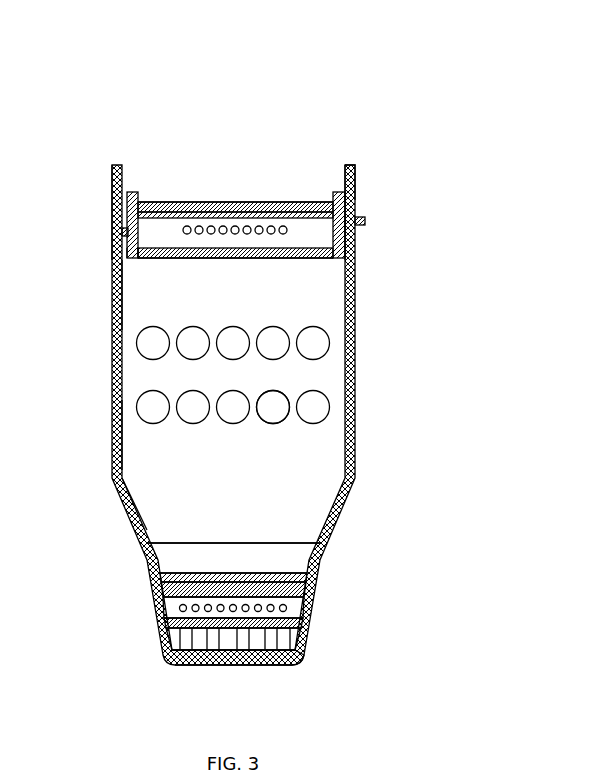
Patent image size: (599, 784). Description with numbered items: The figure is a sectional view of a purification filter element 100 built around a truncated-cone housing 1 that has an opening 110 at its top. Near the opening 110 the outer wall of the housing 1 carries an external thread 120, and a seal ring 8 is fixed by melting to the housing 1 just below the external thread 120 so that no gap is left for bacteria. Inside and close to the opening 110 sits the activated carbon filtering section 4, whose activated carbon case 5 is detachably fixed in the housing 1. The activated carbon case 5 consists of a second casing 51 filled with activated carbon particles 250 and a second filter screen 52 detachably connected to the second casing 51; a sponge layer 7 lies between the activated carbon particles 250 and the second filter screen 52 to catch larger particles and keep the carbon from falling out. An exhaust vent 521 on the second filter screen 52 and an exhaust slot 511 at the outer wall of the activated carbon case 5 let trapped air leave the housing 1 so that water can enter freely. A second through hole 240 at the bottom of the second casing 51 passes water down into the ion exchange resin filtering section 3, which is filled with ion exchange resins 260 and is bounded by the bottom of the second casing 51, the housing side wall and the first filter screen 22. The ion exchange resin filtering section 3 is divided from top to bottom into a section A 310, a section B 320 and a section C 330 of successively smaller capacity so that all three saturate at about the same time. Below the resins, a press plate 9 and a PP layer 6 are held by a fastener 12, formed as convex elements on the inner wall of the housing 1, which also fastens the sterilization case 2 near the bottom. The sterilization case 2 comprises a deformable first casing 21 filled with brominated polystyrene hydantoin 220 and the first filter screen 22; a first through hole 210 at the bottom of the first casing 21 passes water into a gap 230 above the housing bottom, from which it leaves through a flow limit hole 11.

The purification filter element 100 is at (385, 85).
The housing 1 is at (355, 378).
The opening 110 is at (305, 200).
The external thread 120 is at (352, 195).
The section A 310 is at (150, 290).
The section B 320 is at (150, 433).
The section C 330 is at (152, 520).
The ion exchange resin filtering section 3 is at (137, 405).
The ion exchange resins 260 is at (268, 402).
The second through hole 240 is at (262, 258).
The activated carbon particles 250 is at (170, 214).
The activated carbon case 5 is at (405, 205).
The second casing 51 is at (356, 258).
The exhaust slot 511 is at (122, 250).
The second filter screen 52 is at (357, 212).
The exhaust vent 521 is at (238, 205).
The sponge layer 7 is at (190, 214).
The seal ring 8 is at (114, 212).
The activated carbon filtering section 4 is at (120, 235).
The press plate 9 is at (232, 574).
The fastener 12 is at (148, 543).
The sterilization case 2 is at (372, 595).
The first filter screen 22 is at (312, 607).
The first casing 21 is at (312, 638).
The PP layer 6 is at (166, 602).
The brominated polystyrene hydantoin 220 is at (162, 620).
The gap 230 is at (175, 652).
The flow limit hole 11 is at (235, 666).
The first through hole 210 is at (300, 665).